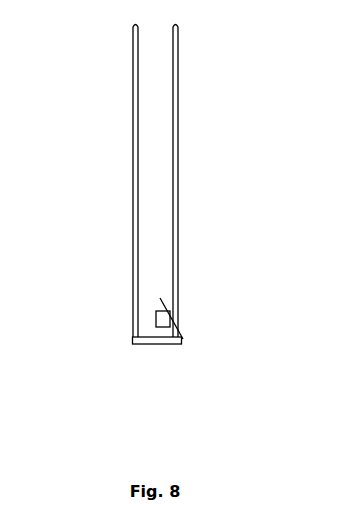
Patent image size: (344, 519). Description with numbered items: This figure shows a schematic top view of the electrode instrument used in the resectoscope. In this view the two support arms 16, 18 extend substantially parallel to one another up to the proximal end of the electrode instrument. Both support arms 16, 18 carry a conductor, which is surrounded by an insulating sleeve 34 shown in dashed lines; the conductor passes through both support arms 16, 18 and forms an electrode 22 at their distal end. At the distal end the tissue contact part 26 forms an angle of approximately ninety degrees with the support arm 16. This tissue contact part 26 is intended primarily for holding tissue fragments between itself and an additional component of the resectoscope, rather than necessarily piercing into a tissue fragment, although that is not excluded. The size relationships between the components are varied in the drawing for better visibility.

The support arm 18 is at (131, 163).
The support arm 16 is at (180, 284).
The electrode 22 is at (150, 345).
The tissue contact part 26 is at (157, 328).
The insulating sleeve 34 is at (182, 340).